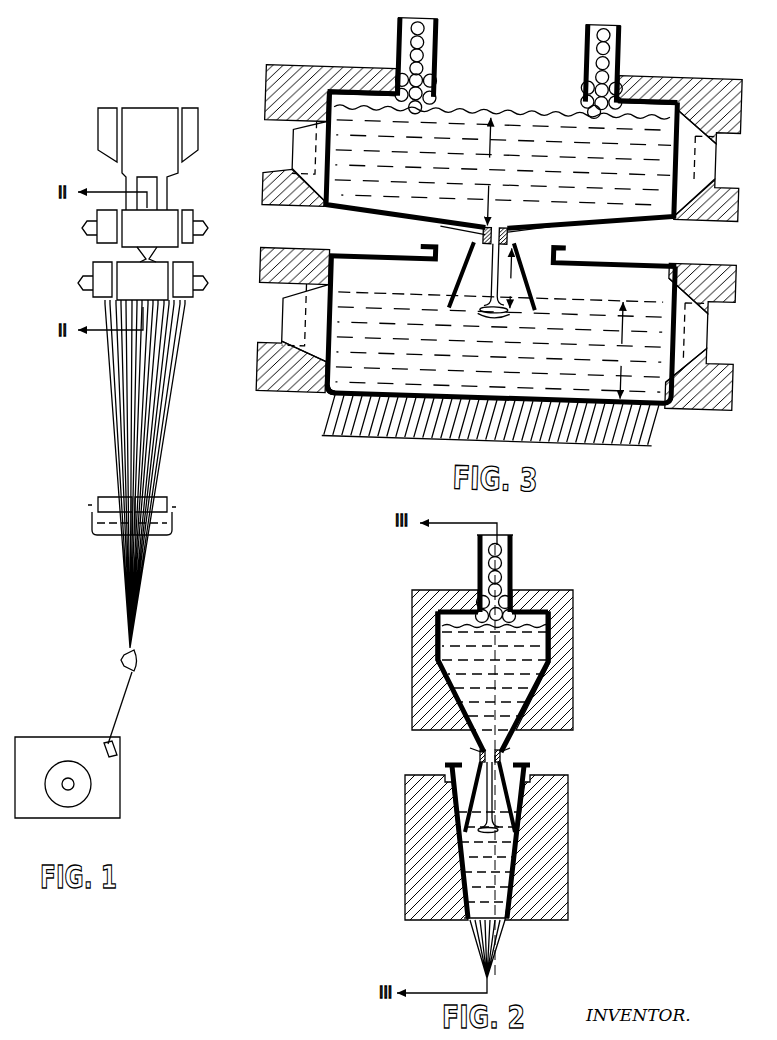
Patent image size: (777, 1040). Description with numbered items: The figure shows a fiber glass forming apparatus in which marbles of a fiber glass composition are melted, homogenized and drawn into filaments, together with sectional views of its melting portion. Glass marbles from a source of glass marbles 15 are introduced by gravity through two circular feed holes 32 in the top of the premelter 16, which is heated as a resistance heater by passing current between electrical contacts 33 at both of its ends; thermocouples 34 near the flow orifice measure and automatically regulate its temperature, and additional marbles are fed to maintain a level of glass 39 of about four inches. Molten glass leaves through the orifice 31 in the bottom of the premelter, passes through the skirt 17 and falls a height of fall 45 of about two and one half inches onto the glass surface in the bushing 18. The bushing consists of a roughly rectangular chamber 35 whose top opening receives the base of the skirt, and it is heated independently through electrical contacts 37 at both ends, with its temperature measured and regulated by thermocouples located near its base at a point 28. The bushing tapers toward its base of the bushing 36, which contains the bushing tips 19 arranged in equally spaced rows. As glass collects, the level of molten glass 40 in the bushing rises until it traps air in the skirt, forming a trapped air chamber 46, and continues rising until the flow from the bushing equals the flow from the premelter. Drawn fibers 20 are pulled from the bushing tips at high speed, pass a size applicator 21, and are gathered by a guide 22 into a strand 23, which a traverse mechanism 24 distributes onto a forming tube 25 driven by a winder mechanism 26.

In FIG. 1, the source of glass marbles 15 is at (135, 108).
In FIG. 1, the premelter 16 is at (191, 211).
In FIG. 3, the premelter 16 is at (497, 92).
In FIG. 2, the premelter 16 is at (557, 650).
In FIG. 1, the skirt 17 is at (152, 256).
In FIG. 3, the skirt 17 is at (541, 278).
In FIG. 2, the skirt 17 is at (514, 793).
In FIG. 1, the bushing 18 is at (191, 301).
In FIG. 3, the bushing 18 is at (623, 258).
In FIG. 2, the bushing 18 is at (518, 882).
In FIG. 1, the bushing tips 19 is at (181, 305).
In FIG. 3, the bushing tips 19 is at (657, 400).
In FIG. 2, the bushing tips 19 is at (503, 927).
In FIG. 1, the drawn fibers 20 is at (147, 422).
In FIG. 1, the size applicator 21 is at (166, 498).
In FIG. 1, the guide 22 is at (138, 661).
In FIG. 1, the strand 23 is at (124, 704).
In FIG. 1, the traverse mechanism 24 is at (118, 754).
In FIG. 1, the forming tube 25 is at (91, 794).
In FIG. 1, the winder mechanism 26 is at (44, 737).
In FIG. 3, the thermocouple point near base of bushing 28 is at (500, 397).
In FIG. 3, the orifice 31 is at (503, 227).
In FIG. 2, the orifice 31 is at (492, 750).
In FIG. 3, the feed holes 32 is at (432, 82).
In FIG. 2, the feed holes 32 is at (515, 590).
In FIG. 3, the electrical contacts 33 is at (290, 165).
In FIG. 3, the thermocouples 34 is at (468, 231).
In FIG. 2, the thermocouples 34 is at (479, 757).
In FIG. 3, the chamber 35 is at (541, 246).
In FIG. 2, the chamber 35 is at (504, 766).
In FIG. 3, the base of the bushing 36 is at (325, 402).
In FIG. 2, the base of the bushing 36 is at (465, 920).
In FIG. 3, the electrical contacts 37 is at (292, 334).
In FIG. 3, the level of glass in premelter 39 is at (489, 171).
In FIG. 3, the level of molten glass in bushing 40 is at (618, 350).
In FIG. 3, the height of fall 45 is at (513, 278).
In FIG. 3, the trapped air chamber 46 is at (488, 298).
In FIG. 2, the trapped air chamber 46 is at (509, 827).